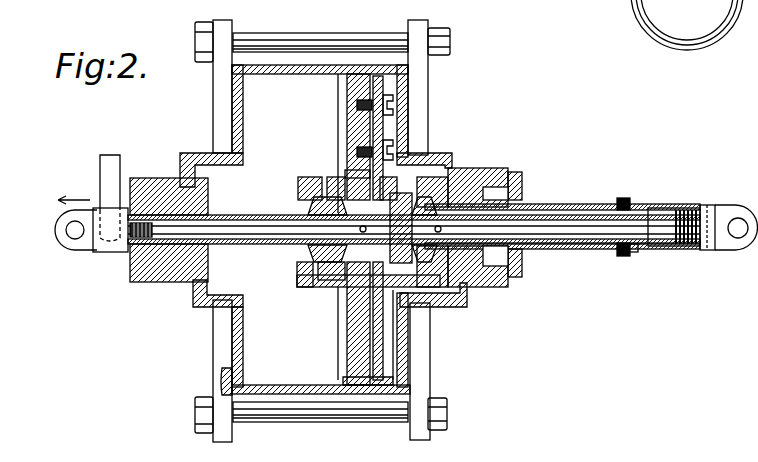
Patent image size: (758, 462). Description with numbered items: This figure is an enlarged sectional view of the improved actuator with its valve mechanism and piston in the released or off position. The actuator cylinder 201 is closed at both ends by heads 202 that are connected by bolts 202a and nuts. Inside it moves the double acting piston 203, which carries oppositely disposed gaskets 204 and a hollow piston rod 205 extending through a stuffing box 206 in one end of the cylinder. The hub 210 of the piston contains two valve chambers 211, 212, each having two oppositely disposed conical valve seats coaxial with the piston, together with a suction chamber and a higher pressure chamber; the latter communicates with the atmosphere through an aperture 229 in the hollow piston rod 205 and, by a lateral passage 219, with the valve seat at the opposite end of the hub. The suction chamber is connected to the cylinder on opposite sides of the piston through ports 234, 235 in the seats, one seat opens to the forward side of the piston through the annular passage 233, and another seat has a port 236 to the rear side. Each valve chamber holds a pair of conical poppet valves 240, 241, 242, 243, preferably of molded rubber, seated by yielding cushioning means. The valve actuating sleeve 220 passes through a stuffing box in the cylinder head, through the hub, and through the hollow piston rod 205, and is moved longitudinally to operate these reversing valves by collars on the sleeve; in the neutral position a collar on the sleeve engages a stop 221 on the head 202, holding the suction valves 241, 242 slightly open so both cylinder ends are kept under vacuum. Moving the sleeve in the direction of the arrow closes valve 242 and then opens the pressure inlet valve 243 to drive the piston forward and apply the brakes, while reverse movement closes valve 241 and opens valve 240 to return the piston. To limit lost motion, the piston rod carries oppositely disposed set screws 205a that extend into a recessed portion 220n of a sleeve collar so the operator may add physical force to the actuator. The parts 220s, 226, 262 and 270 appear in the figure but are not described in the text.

The actuator cylinder 201 is at (276, 74).
The head 202 is at (232, 112).
The bolt 202a is at (315, 41).
The double acting piston 203 is at (352, 129).
The gasket 204 is at (350, 389).
The hollow piston rod 205 is at (589, 208).
The set screw 205a is at (632, 197).
The stuffing box 206 is at (516, 267).
The hub 210 is at (306, 185).
The valve chamber 211 is at (333, 186).
The valve chamber 212 is at (430, 289).
The lateral passage 219 is at (327, 281).
The valve actuating sleeve 220 is at (266, 246).
The recessed portion 220n is at (633, 250).
The spring piston 220s is at (647, 213).
The stop 221 is at (130, 284).
The clevis eye 226 is at (97, 252).
The aperture 229 is at (706, 233).
The passage 233 is at (291, 264).
The port 234 is at (344, 175).
The port 235 is at (401, 158).
The port 236 is at (432, 187).
The poppet valve 240 is at (310, 203).
The poppet valve 241 is at (333, 282).
The poppet valve 242 is at (410, 307).
The poppet valve 243 is at (435, 256).
The pipe 262 is at (102, 170).
The wheel rim 270 is at (640, 4).